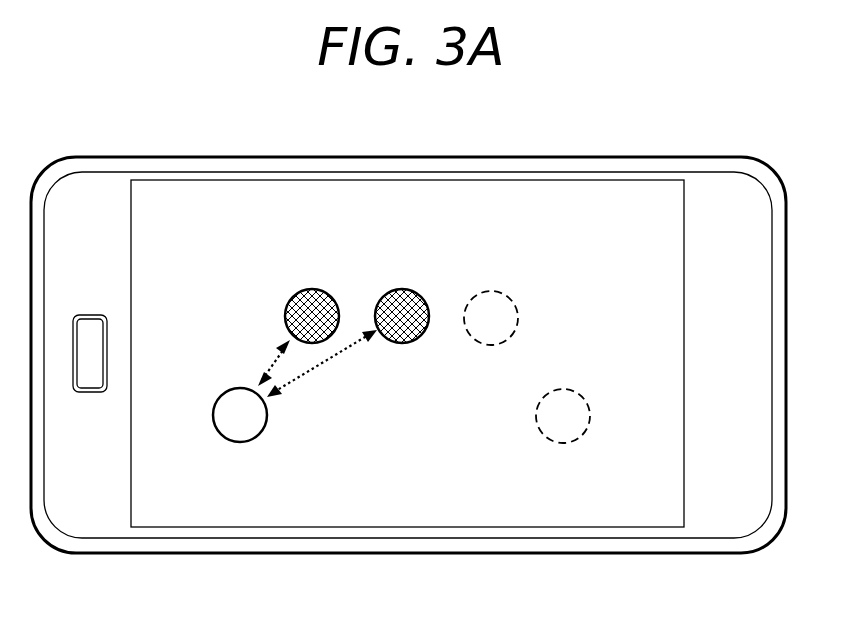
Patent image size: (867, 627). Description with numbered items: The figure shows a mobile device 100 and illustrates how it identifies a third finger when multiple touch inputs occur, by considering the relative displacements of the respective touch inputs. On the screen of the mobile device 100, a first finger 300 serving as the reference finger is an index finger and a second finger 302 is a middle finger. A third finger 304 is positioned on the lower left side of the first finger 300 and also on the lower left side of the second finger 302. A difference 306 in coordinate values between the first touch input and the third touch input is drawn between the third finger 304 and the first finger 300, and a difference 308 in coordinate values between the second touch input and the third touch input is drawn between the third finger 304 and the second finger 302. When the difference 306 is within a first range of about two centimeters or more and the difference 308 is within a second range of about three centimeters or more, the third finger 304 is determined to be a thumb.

The mobile device 100 is at (680, 157).
The first finger 300 is at (300, 290).
The second finger 302 is at (402, 295).
The third finger 304 is at (215, 403).
The difference in coordinate values between first touch input and third touch input 306 is at (262, 353).
The difference in coordinate values between second touch input and third touch input 308 is at (332, 360).